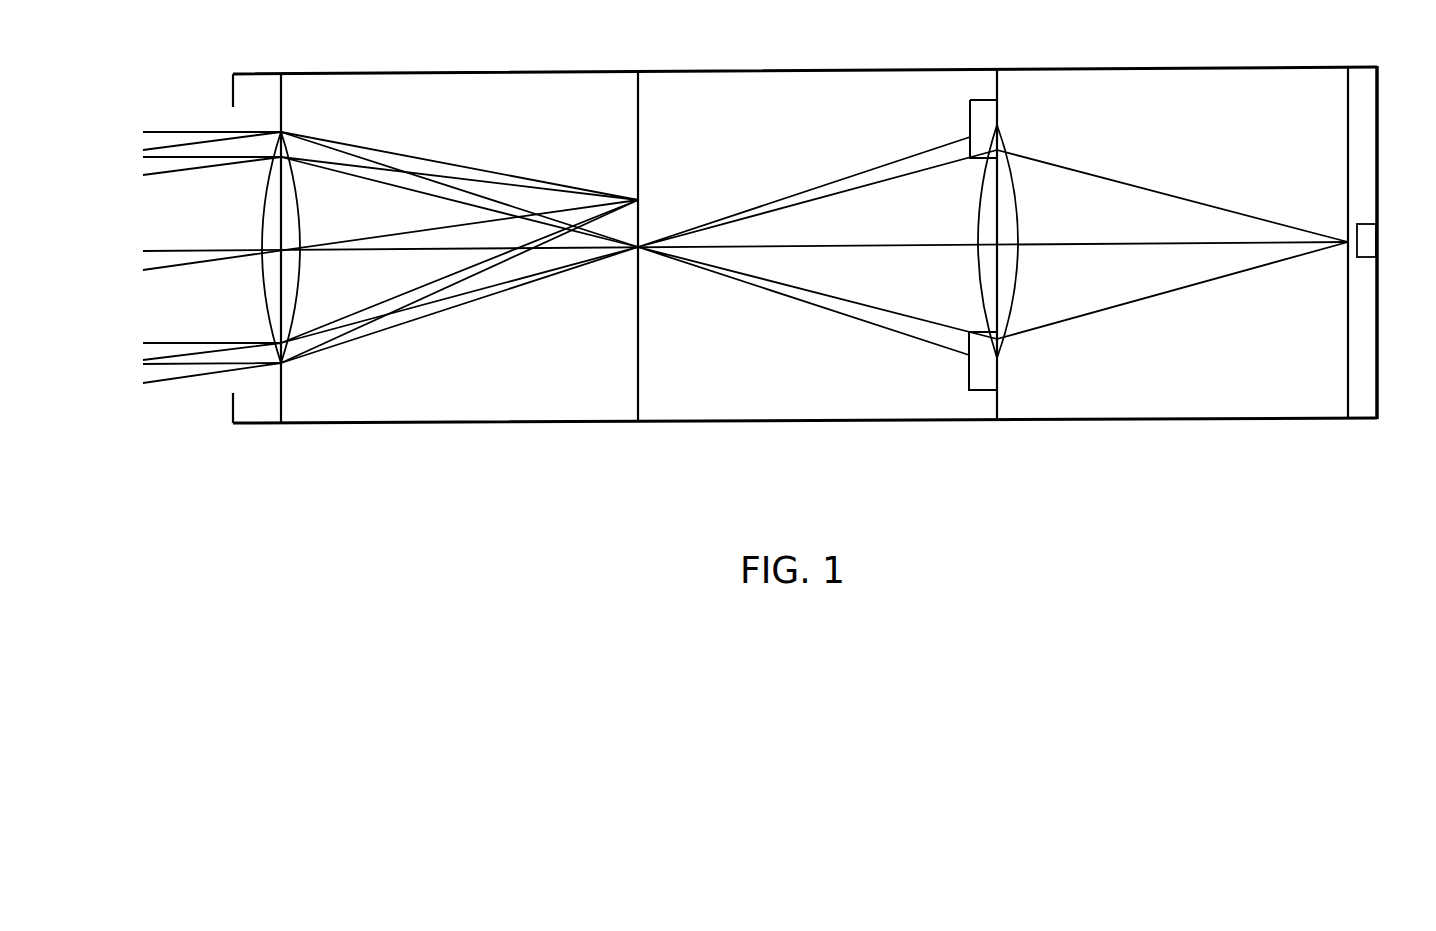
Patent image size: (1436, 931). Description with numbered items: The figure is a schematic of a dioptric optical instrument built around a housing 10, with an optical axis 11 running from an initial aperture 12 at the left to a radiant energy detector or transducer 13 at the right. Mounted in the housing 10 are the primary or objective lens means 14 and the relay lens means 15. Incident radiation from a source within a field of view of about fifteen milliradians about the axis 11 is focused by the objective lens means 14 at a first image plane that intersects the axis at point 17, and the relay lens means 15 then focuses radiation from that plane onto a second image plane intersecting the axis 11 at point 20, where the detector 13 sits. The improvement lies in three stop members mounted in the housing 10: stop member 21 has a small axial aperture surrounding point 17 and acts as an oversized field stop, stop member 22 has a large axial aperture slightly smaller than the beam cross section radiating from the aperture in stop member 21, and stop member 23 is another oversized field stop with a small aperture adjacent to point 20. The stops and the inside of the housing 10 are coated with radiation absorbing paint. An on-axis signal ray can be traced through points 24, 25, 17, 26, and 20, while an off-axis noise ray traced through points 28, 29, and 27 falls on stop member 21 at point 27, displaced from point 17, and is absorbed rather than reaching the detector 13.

The housing 10 is at (770, 71).
The optical axis 11 is at (866, 246).
The initial aperture 12 is at (233, 412).
The radiant energy detector 13 is at (1366, 250).
The objective lens means 14 is at (248, 184).
The relay lens means 15 is at (1016, 130).
The first image plane point 17 is at (646, 243).
The second image plane point 20 is at (1360, 242).
The first stop member 21 is at (641, 328).
The second stop member 22 is at (969, 370).
The third stop member 23 is at (1348, 318).
The on-axis ray entry point 24 is at (193, 342).
The on-axis ray lens point 25 is at (287, 342).
The on-axis ray relay point 26 is at (1000, 152).
The off-axis ray stop point 27 is at (640, 199).
The off-axis ray entry point 28 is at (175, 174).
The off-axis ray lens point 29 is at (287, 160).